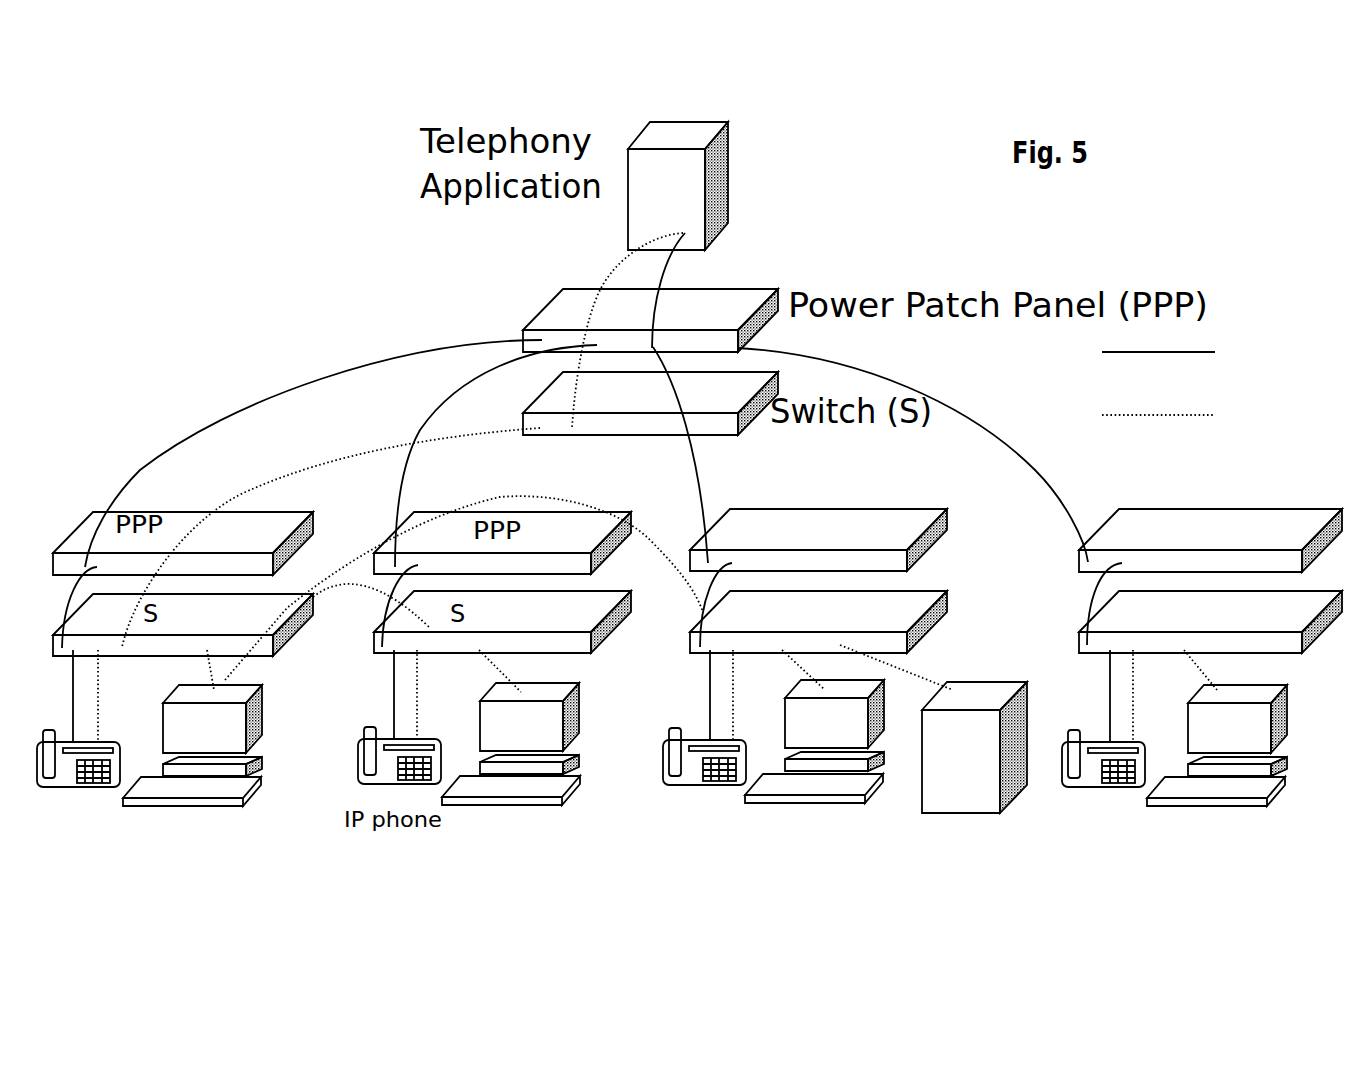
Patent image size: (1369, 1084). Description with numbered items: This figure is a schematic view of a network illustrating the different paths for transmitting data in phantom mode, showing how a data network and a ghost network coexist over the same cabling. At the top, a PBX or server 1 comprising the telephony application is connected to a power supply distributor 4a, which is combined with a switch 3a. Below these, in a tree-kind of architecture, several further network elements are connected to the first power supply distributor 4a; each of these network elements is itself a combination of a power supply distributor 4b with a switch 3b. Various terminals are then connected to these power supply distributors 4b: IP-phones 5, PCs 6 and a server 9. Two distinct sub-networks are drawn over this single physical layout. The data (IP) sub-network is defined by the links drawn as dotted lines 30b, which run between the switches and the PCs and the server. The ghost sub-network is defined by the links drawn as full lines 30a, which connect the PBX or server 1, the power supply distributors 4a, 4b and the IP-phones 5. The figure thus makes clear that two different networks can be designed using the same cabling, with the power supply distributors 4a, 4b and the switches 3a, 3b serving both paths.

The PBX or server 1 is at (725, 162).
The power supply distributor 4a is at (755, 293).
The switch 3a is at (760, 381).
The ghost sub-network link 30a is at (1215, 352).
The data sub-network link 30b is at (1213, 415).
The power supply distributor 4b is at (1067, 503).
The switch 3b is at (1088, 610).
The IP-phone 5 is at (67, 786).
The PC 6 is at (262, 720).
The server 9 is at (923, 785).